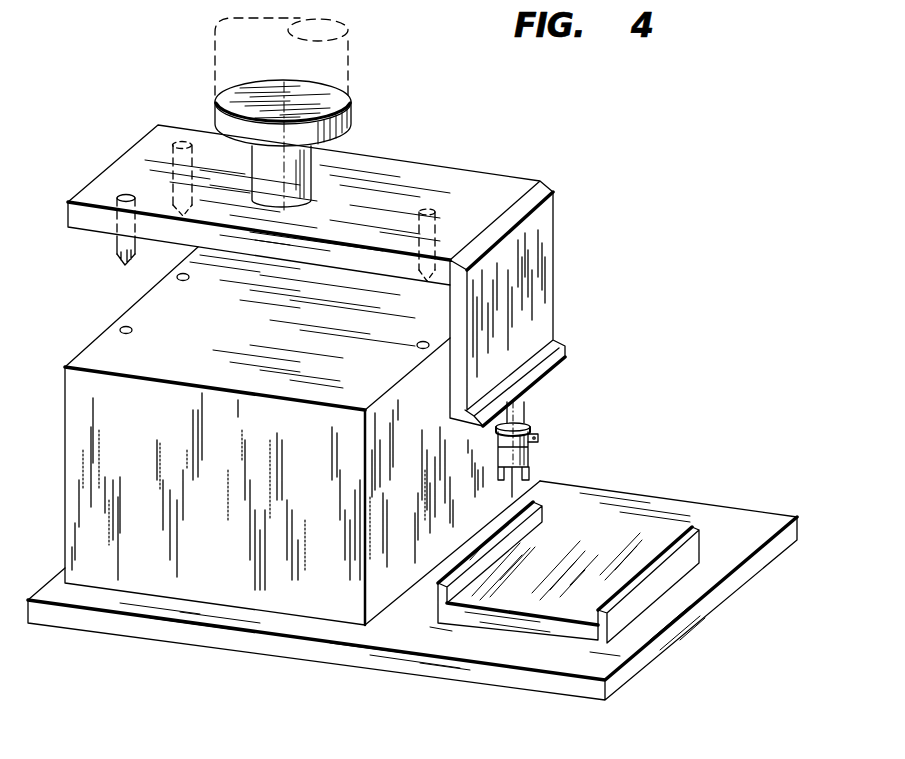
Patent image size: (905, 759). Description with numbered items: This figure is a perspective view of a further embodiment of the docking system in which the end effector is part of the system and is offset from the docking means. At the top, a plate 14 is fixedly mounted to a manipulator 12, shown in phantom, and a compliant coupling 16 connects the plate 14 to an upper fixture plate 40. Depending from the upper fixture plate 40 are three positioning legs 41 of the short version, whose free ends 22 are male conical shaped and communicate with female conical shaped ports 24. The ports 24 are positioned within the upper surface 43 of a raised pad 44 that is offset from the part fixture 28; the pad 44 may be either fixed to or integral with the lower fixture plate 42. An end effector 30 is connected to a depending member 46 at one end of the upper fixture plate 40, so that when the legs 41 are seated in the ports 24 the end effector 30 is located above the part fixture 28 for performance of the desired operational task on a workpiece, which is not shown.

The manipulator 12 is at (212, 60).
The plate 14 is at (350, 118).
The compliant coupling 16 is at (312, 198).
The free ends 22 is at (125, 265).
The ports 24 is at (189, 279).
The part fixture 28 is at (567, 632).
The end effector 30 is at (545, 430).
The upper fixture plate 40 is at (448, 178).
The positioning legs 41 is at (117, 247).
The lower fixture plate 42 is at (447, 650).
The upper surface 43 is at (336, 357).
The raised pad 44 is at (393, 600).
The depending member 46 is at (543, 297).